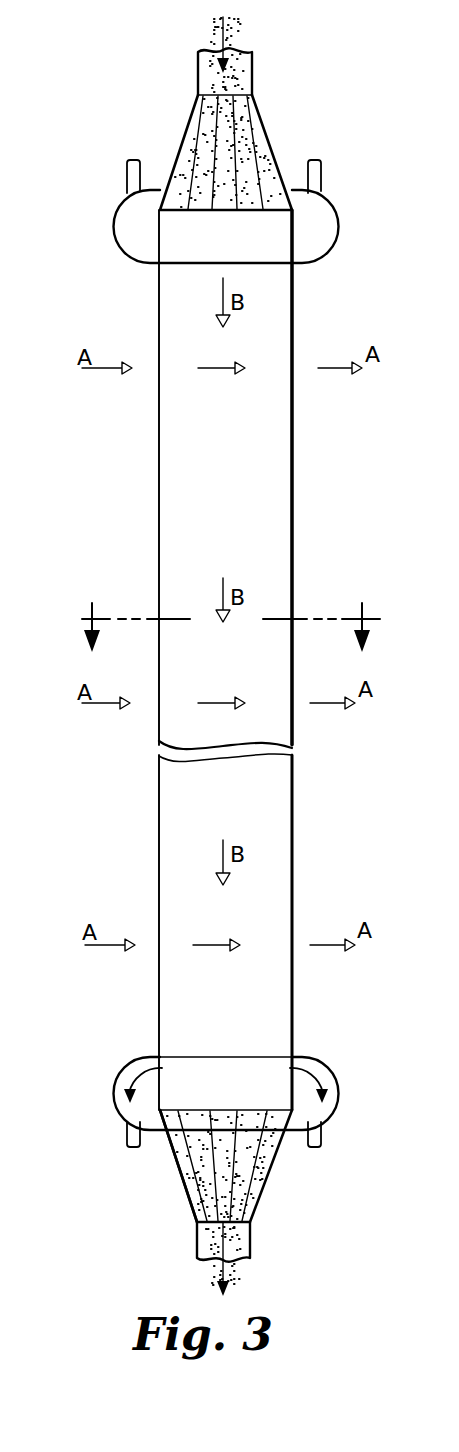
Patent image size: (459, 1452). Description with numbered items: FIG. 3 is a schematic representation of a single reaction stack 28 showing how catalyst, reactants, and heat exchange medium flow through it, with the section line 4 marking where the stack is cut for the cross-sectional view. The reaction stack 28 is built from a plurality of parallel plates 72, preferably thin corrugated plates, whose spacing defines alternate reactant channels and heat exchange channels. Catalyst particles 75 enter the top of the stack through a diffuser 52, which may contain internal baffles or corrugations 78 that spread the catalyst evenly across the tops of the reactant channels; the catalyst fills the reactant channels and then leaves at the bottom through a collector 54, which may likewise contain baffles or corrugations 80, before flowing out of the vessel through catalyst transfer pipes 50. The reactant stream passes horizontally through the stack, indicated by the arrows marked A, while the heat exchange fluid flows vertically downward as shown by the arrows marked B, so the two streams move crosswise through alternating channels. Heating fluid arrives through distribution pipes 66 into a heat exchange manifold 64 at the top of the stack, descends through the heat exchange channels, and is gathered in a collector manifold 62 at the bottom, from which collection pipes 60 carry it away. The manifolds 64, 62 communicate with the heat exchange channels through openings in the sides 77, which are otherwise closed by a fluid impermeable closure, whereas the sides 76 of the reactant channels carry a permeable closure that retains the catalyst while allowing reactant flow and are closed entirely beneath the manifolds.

The reaction stack 28 is at (309, 531).
The plates 72 is at (273, 335).
The sides of heat exchange channels 77 is at (294, 416).
The sides of reactant channels 76 is at (294, 599).
The diffuser 52 is at (183, 140).
The baffles or corrugations 78 is at (257, 147).
The catalyst particles 75 is at (237, 65).
The heat exchange manifold 64 is at (121, 248).
The distribution pipes 66 is at (127, 171).
The collector manifold 62 is at (130, 1066).
The collection pipes 60 is at (127, 1136).
The catalyst transfer pipes 50 is at (283, 1156).
The collector 54 is at (185, 1193).
The baffles or corrugations 80 is at (188, 1155).
The section line 4- 4 is at (226, 621).